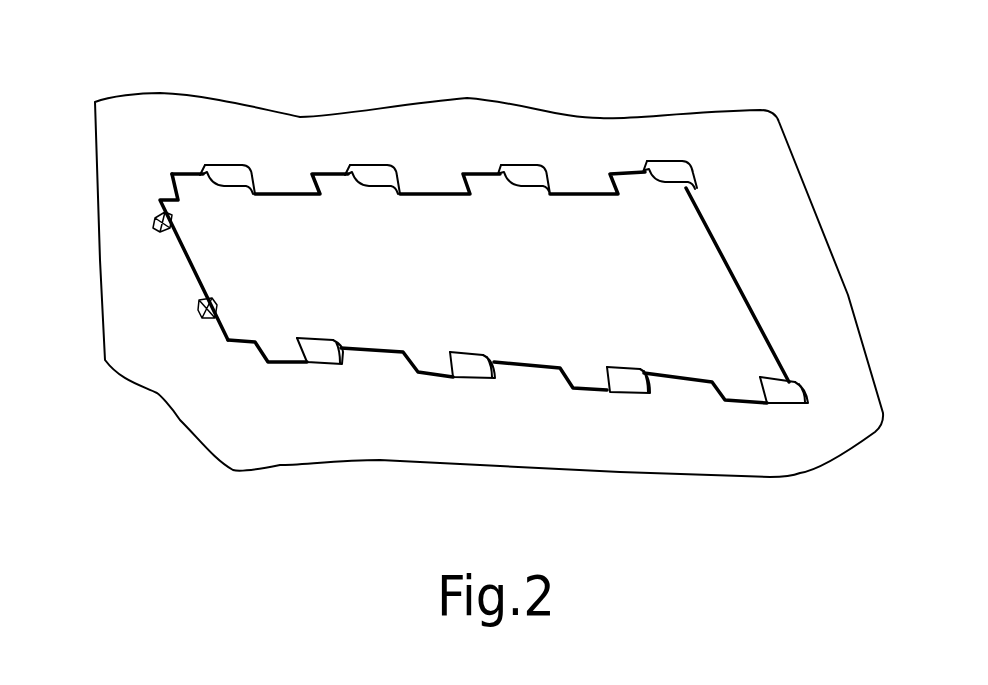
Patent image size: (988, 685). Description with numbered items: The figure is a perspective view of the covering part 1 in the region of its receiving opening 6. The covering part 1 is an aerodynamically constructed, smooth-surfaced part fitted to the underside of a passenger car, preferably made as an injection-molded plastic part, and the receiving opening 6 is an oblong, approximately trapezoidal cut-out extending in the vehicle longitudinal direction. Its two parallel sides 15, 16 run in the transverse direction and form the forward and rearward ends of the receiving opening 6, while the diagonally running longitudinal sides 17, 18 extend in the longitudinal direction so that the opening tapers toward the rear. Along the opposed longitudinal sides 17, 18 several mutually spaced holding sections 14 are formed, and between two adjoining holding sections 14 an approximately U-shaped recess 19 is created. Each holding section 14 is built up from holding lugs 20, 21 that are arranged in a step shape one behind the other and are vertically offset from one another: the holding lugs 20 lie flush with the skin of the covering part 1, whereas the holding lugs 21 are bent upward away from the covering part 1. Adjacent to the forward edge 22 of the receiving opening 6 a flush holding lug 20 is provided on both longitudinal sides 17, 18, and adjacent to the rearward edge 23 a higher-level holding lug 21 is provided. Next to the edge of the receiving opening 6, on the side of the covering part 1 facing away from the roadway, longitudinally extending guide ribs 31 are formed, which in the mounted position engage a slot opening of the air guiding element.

The covering part 1 is at (485, 125).
The receiving opening 6 is at (687, 275).
The holding sections 14 is at (250, 156).
The side 15 is at (185, 276).
The side 16 is at (738, 288).
The longitudinal side 17 is at (579, 158).
The longitudinal side 18 is at (441, 380).
The U-shaped recess 19 is at (280, 350).
The holding lug 20 is at (163, 180).
The holding lug 21 is at (225, 172).
The forward edge 22 is at (187, 274).
The rearward edge 23 is at (710, 213).
The guide rib 31 is at (153, 220).